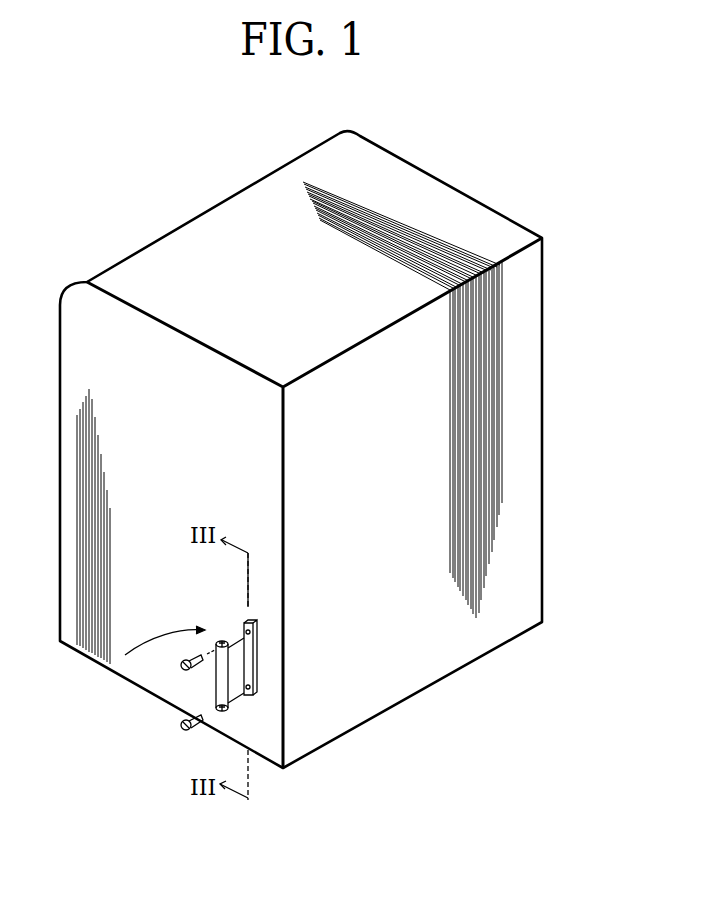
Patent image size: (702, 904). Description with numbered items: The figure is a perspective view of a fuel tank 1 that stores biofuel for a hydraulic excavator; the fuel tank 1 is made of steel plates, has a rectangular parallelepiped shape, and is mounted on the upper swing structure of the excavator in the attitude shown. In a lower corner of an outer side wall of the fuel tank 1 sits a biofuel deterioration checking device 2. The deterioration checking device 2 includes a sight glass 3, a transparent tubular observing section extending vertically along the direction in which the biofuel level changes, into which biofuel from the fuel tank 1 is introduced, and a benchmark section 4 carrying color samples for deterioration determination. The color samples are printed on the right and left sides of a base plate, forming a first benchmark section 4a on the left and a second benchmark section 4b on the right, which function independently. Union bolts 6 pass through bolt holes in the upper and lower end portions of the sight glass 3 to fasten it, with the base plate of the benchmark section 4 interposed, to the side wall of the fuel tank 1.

The fuel tank 1 is at (466, 212).
The biofuel deterioration checking device 2 is at (125, 655).
The sight glass 3 is at (220, 678).
The benchmark section 4 is at (339, 704).
The first benchmark section 4a is at (339, 704).
The second benchmark section 4b is at (257, 667).
The union bolts 6 is at (178, 669).